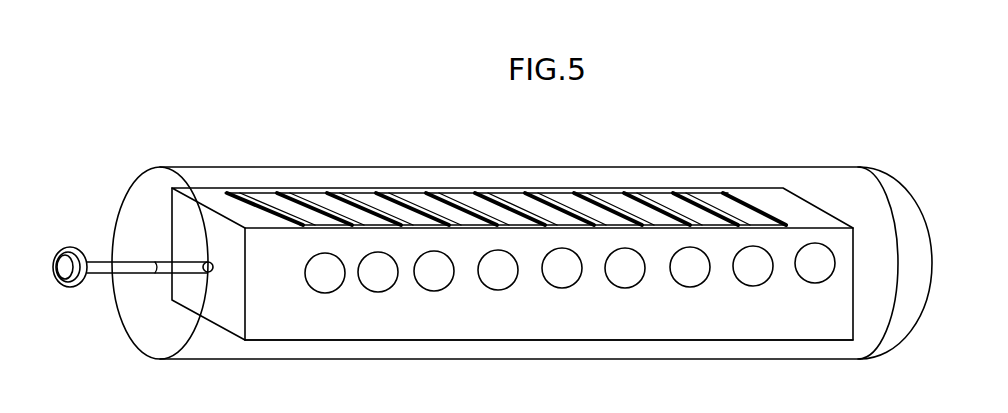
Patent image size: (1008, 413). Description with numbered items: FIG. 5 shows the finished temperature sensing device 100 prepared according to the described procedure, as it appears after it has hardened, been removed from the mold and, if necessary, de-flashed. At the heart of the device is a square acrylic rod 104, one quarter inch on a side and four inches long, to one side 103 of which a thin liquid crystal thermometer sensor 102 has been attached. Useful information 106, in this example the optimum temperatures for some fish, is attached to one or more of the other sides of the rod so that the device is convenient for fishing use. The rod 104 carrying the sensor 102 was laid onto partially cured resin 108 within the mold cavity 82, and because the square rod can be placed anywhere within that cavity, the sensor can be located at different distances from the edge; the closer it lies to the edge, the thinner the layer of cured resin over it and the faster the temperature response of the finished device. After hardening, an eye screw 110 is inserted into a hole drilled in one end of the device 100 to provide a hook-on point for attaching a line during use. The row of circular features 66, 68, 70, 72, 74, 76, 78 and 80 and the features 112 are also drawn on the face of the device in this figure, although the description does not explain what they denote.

The opening 66 is at (815, 283).
The opening 68 is at (753, 284).
The opening 70 is at (690, 285).
The opening 72 is at (625, 285).
The opening 74 is at (562, 285).
The opening 76 is at (498, 286).
The opening 78 is at (434, 287).
The opening 80 is at (378, 287).
The mold cavity 82 is at (325, 288).
The finished device 100 is at (227, 147).
The liquid crystal thermometer sensor 102 is at (338, 338).
The side of acrylic rod 103 is at (277, 320).
The acrylic rod 104 is at (220, 305).
The information 106 is at (573, 212).
The partially cured resin 108 is at (827, 188).
The eye screw 110 is at (70, 287).
The lower wall 112 is at (643, 325).